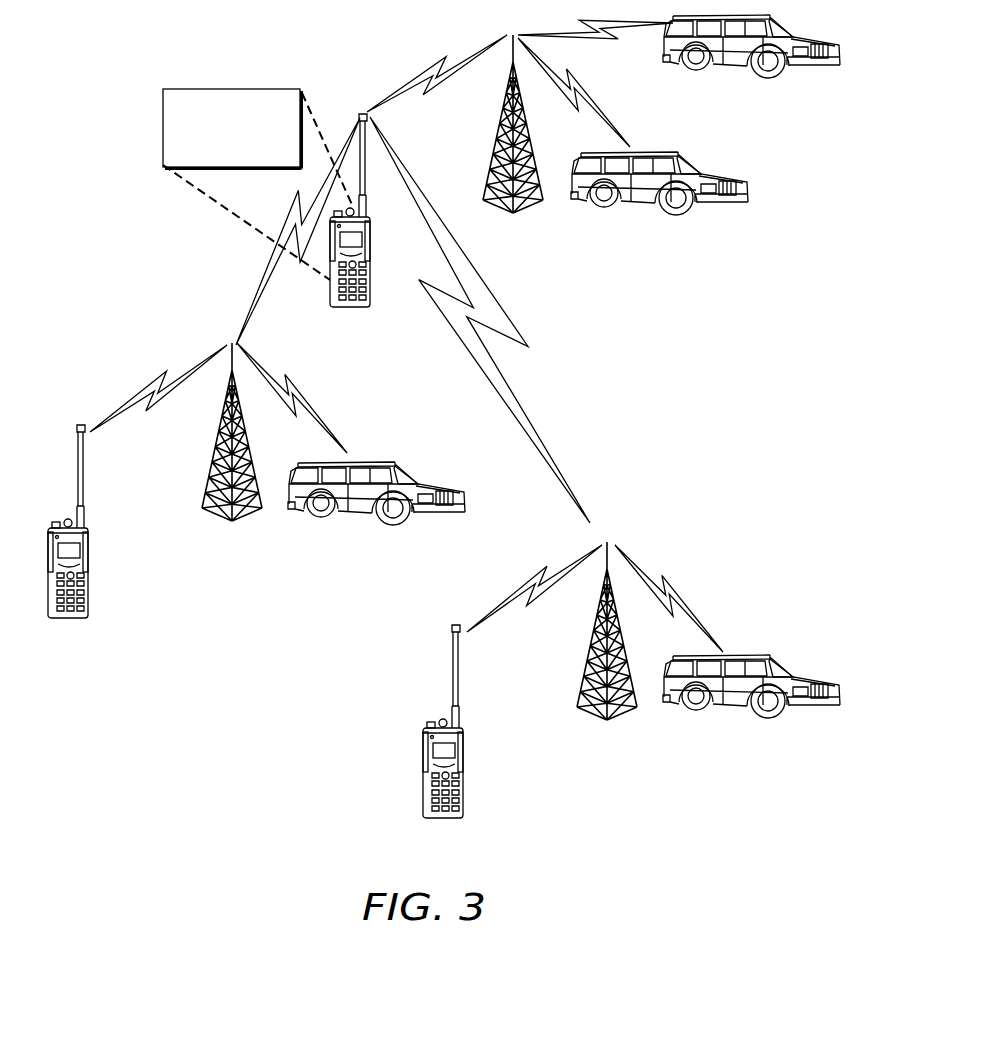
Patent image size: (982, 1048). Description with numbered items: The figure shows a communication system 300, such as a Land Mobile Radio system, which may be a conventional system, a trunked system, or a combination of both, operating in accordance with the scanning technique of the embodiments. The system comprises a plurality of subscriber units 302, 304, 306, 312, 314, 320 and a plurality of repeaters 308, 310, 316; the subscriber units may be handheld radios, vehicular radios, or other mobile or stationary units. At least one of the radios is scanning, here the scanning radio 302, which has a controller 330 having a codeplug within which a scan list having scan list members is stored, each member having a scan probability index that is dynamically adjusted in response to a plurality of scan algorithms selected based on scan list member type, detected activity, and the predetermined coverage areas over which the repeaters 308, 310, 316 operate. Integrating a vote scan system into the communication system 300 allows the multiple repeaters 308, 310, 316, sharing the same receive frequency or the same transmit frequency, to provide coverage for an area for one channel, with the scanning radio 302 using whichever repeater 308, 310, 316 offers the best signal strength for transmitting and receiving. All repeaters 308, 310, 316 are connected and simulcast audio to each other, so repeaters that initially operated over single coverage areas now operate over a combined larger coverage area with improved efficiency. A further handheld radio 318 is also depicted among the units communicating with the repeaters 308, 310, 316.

The communication system 300 is at (821, 851).
The scanning radio 302 is at (372, 259).
The subscriber unit 304 is at (90, 557).
The subscriber unit 306 is at (357, 513).
The repeater 308 is at (212, 455).
The repeater 310 is at (498, 137).
The subscriber unit 312 is at (733, 67).
The subscriber unit 314 is at (641, 204).
The repeater 316 is at (587, 655).
The portable radio 318 is at (423, 758).
The subscriber unit 320 is at (733, 713).
The controller 330 is at (177, 89).